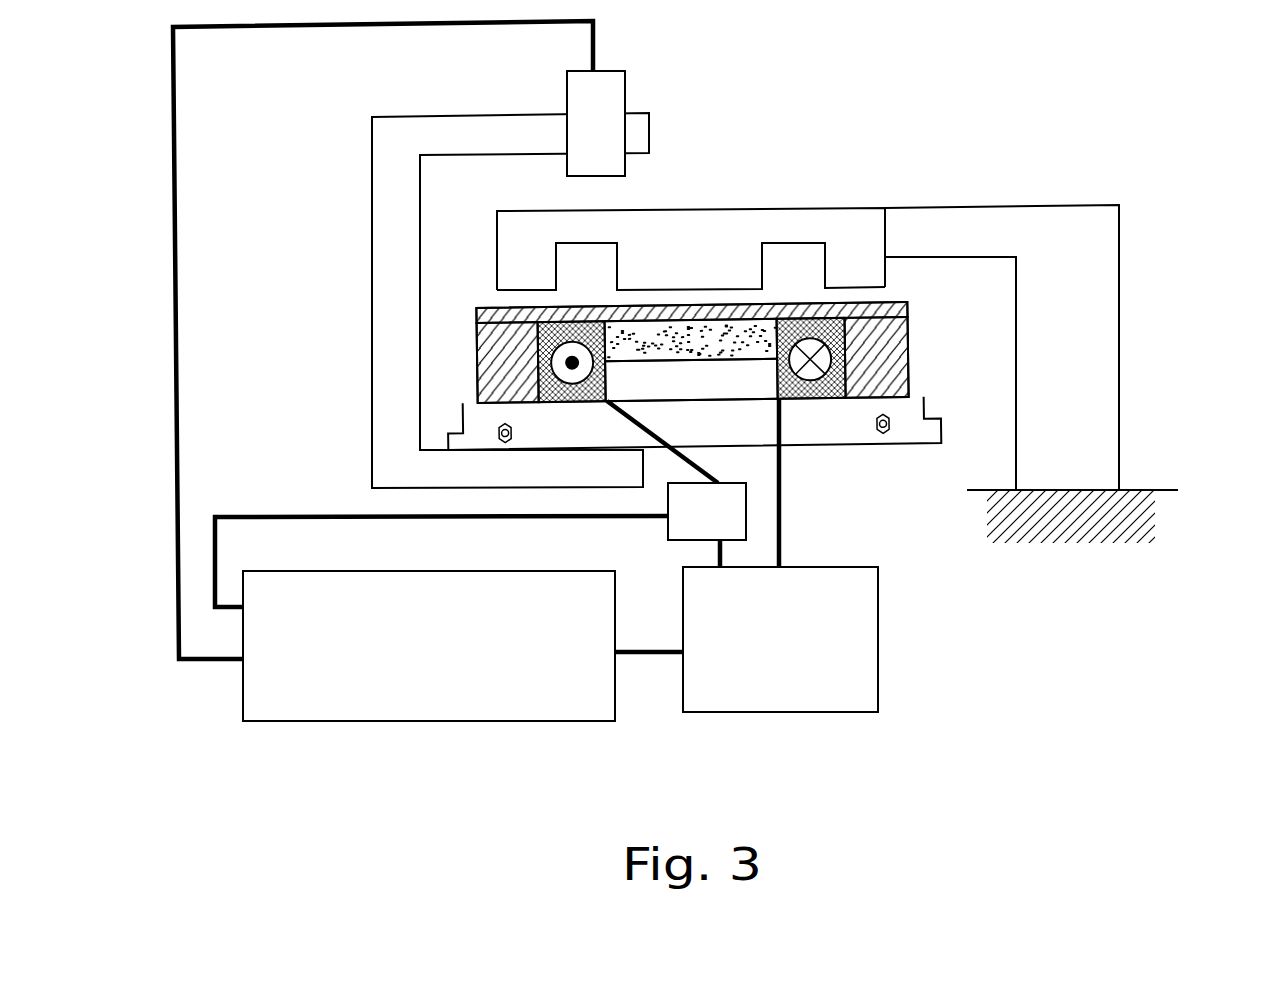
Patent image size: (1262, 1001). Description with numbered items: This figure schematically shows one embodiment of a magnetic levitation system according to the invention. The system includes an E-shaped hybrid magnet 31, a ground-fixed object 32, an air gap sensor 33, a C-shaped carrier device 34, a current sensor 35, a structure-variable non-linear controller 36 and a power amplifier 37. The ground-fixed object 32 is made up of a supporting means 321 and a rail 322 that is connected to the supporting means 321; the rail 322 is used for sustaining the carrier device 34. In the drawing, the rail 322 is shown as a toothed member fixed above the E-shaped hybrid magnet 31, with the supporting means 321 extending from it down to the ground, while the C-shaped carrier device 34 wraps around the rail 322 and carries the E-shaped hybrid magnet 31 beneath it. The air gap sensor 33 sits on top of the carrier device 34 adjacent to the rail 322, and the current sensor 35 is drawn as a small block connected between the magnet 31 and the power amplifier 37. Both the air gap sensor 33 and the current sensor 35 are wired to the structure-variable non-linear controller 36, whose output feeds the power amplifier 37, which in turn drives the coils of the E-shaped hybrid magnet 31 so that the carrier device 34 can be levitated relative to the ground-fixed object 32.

The E-shaped hybrid magnet 31 is at (878, 453).
The ground-fixed object 32 is at (691, 198).
The supporting means 321 is at (1093, 242).
The rail 322 is at (688, 232).
The air gap sensor 33 is at (608, 86).
The C-shaped carrier device 34 is at (390, 277).
The current sensor 35 is at (720, 517).
The structure-variable non-linear controller 36 is at (455, 705).
The power amplifier 37 is at (775, 698).